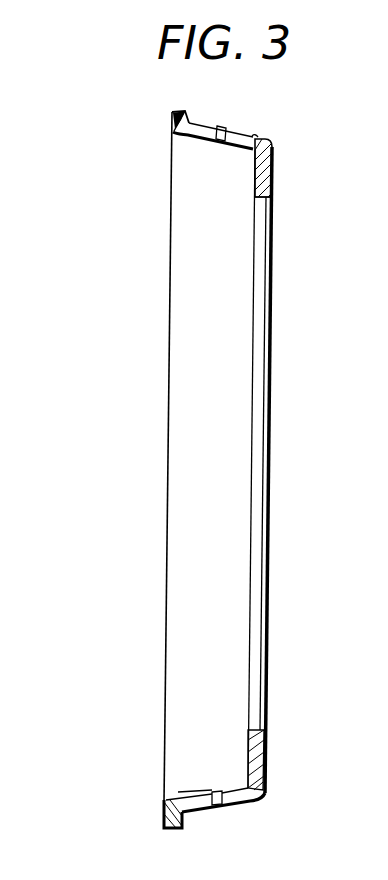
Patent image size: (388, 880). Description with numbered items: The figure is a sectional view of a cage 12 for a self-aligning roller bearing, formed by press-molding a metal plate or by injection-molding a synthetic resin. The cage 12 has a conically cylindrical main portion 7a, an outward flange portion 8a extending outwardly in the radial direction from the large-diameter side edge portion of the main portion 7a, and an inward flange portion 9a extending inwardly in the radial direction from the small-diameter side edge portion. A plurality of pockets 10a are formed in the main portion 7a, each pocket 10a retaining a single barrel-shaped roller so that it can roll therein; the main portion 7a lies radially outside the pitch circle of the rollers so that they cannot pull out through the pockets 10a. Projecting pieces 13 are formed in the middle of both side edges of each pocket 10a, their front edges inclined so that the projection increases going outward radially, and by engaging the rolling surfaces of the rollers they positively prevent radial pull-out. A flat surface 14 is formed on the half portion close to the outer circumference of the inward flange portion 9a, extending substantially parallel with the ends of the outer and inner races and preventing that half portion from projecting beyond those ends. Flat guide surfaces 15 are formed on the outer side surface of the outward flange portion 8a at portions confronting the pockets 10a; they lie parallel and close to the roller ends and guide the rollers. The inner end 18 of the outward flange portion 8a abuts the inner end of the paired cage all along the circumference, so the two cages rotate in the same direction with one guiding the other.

The main portion 7a is at (257, 136).
The outward flange portion 8a is at (178, 111).
The inward flange portion 9a is at (267, 200).
The pocket 10a is at (270, 151).
The cage 12 is at (262, 172).
The projecting piece 13 is at (226, 136).
The flat surface 14 is at (263, 772).
The guide surface 15 is at (186, 116).
The inner end 18 is at (172, 121).